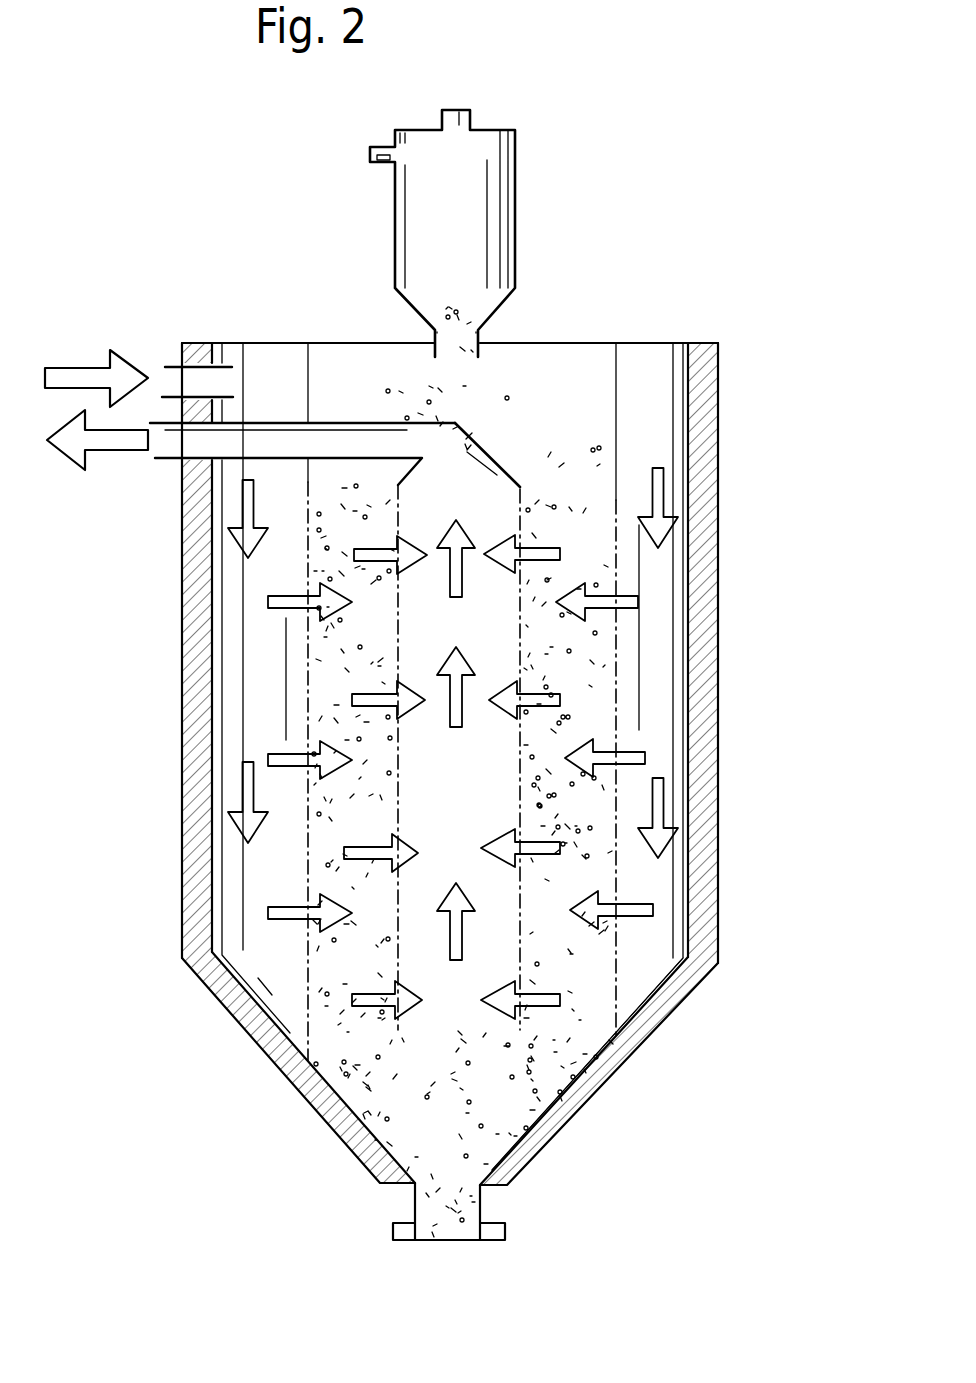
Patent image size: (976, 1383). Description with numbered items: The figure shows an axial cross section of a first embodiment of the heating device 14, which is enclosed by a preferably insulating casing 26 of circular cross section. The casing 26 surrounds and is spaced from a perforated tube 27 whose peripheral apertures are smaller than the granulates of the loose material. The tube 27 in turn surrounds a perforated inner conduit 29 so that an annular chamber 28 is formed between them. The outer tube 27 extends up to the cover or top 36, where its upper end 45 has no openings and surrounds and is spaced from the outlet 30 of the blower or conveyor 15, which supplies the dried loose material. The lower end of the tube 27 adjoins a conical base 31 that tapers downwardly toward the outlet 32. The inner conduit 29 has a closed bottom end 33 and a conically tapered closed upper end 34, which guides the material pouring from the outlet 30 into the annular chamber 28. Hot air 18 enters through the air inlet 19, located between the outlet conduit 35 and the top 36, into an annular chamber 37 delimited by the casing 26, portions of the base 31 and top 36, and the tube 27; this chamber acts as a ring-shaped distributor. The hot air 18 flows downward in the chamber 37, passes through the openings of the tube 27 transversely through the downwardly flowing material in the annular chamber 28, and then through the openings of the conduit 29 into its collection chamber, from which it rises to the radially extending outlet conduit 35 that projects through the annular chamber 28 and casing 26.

The heating device 14 is at (735, 189).
The blower or conveyor 15 is at (475, 215).
The outlet of the blower or conveyor 30 is at (467, 327).
The cover or top 36 is at (345, 340).
The upper closed end 34 is at (505, 470).
The hot air 18 is at (127, 380).
The air inlet 19 is at (205, 382).
The outlet conduit 35 is at (205, 428).
The end of the outer tube 45 is at (617, 440).
The annular chamber 28 is at (573, 512).
The tube 27 is at (617, 642).
The casing 26 is at (693, 710).
The conduit 29 is at (518, 902).
The annular chamber 37 is at (648, 952).
The conical base 31 is at (643, 1023).
The bottom end 33 is at (497, 1060).
The outlet 32 is at (502, 1232).